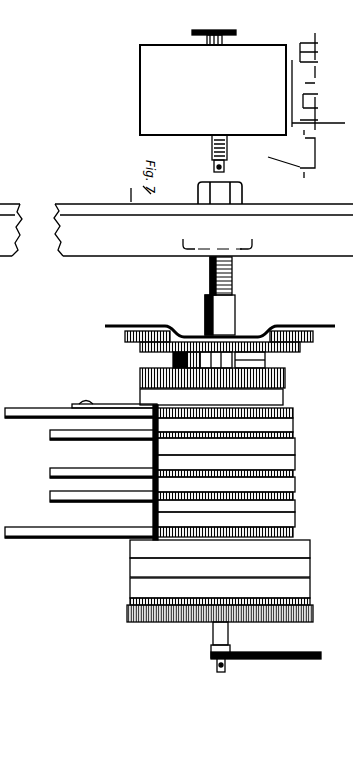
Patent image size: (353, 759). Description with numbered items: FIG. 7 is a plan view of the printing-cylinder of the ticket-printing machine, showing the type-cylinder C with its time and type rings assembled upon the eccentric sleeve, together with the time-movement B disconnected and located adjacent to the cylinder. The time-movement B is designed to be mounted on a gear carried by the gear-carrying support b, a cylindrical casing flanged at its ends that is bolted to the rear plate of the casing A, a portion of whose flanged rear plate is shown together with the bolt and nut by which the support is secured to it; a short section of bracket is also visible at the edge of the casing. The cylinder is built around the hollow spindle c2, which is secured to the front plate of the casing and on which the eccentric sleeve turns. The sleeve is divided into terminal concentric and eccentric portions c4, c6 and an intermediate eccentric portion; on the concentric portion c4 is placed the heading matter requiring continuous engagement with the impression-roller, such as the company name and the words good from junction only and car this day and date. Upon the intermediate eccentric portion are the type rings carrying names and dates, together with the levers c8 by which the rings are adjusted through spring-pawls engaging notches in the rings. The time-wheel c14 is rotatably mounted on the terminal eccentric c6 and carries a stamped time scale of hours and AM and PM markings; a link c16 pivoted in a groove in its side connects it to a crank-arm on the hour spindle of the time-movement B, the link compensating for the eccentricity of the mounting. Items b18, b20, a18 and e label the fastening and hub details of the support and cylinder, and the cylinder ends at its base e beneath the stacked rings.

The casing A is at (176, 230).
The time-movement B is at (155, 58).
The gear-carrying support b is at (246, 338).
The slot in beam b18 is at (248, 251).
The nut b20 is at (232, 184).
The hub and nut a18 is at (265, 359).
The time-wheel c14 is at (284, 396).
The hollow spindle c2 is at (294, 442).
The type-cylinder C is at (300, 466).
The concentric portion c4 is at (296, 504).
The terminal eccentric portion c6 is at (310, 563).
The base wheel e is at (313, 615).
The levers c8 is at (60, 410).
The link c16 is at (137, 404).
The element bracket is at (306, 105).